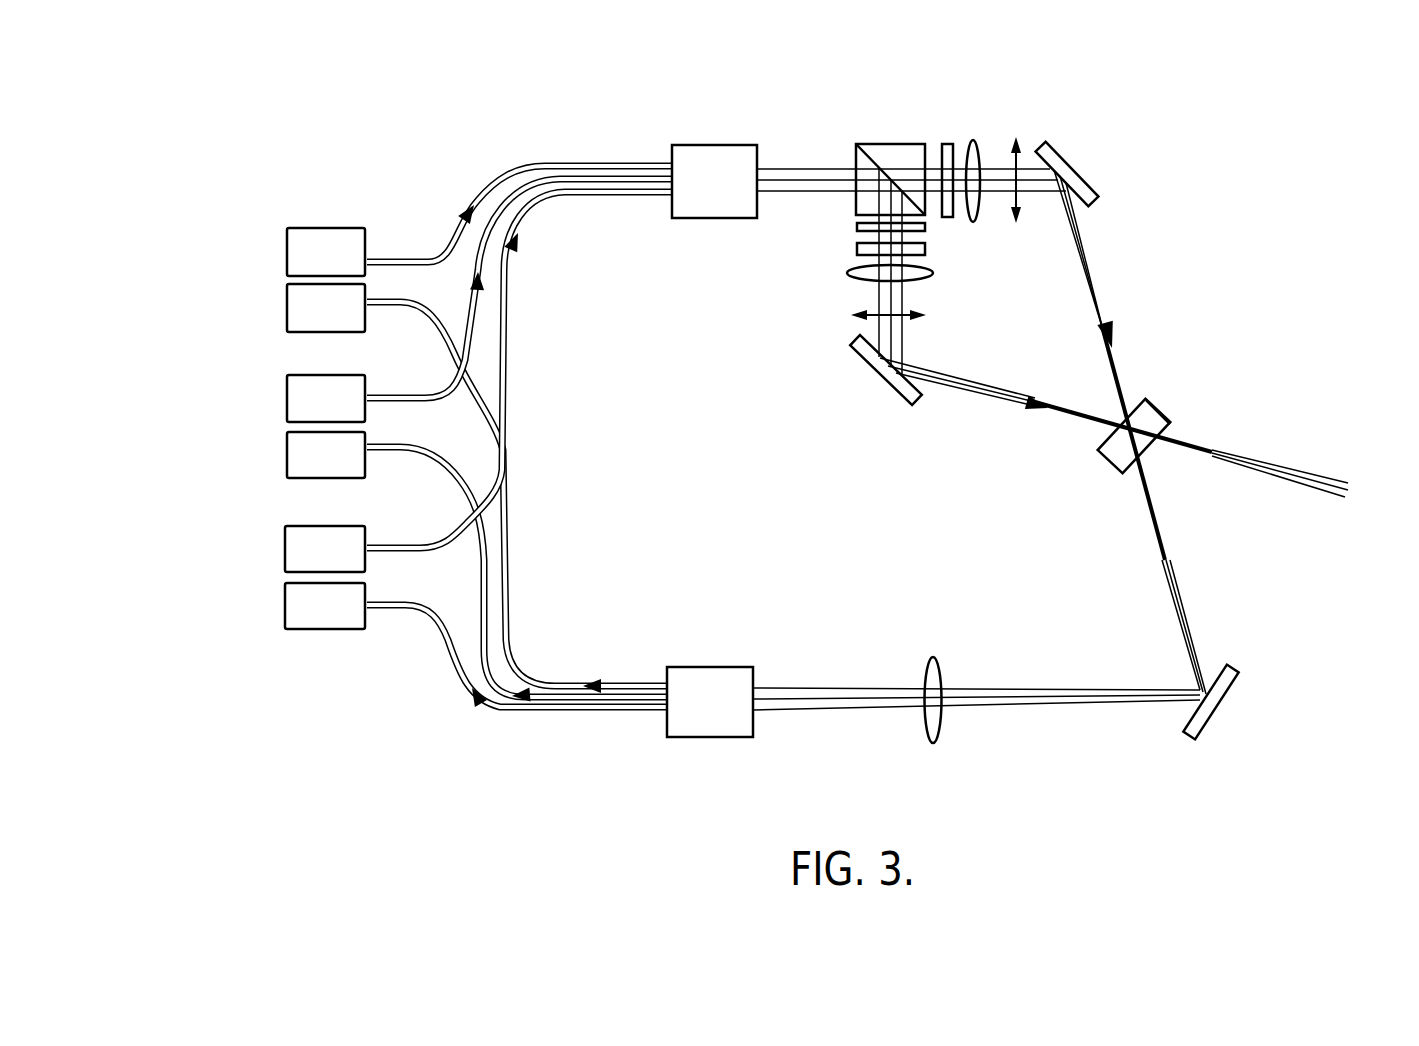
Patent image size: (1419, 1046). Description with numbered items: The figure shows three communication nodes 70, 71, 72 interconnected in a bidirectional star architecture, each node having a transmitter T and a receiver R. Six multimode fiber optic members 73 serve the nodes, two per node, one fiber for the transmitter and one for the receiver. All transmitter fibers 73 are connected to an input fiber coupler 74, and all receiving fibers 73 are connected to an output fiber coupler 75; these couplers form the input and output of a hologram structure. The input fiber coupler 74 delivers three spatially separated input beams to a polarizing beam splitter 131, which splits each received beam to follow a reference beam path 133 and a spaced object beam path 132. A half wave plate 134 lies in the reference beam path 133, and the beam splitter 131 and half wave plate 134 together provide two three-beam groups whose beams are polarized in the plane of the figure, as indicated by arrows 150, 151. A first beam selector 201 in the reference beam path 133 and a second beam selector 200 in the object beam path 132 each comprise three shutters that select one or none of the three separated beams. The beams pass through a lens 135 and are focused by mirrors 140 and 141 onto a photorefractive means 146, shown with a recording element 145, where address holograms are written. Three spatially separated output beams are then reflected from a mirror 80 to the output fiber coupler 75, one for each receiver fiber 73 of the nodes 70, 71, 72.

The communication node 70 is at (272, 284).
The communication node 71 is at (272, 424).
The communication node 72 is at (272, 576).
The multimode fiber optic members 73 is at (453, 186).
The input fiber coupler 74 is at (690, 218).
The output fiber coupler 75 is at (690, 737).
The mirror 80 is at (1217, 712).
The polarizing beam splitter 131 is at (915, 143).
The object beam path 132 is at (1093, 265).
The reference beam path 133 is at (987, 402).
The half wave plate 134 is at (927, 228).
The lens 135 is at (930, 280).
The mirror 140 is at (885, 382).
The mirror 141 is at (1082, 172).
The holographic recording medium 145 is at (1157, 420).
The photorefractive means 146 is at (1144, 398).
The arrow 150 is at (1023, 206).
The arrow 151 is at (853, 318).
The second beam selector 200 is at (948, 143).
The first beam selector 201 is at (857, 248).